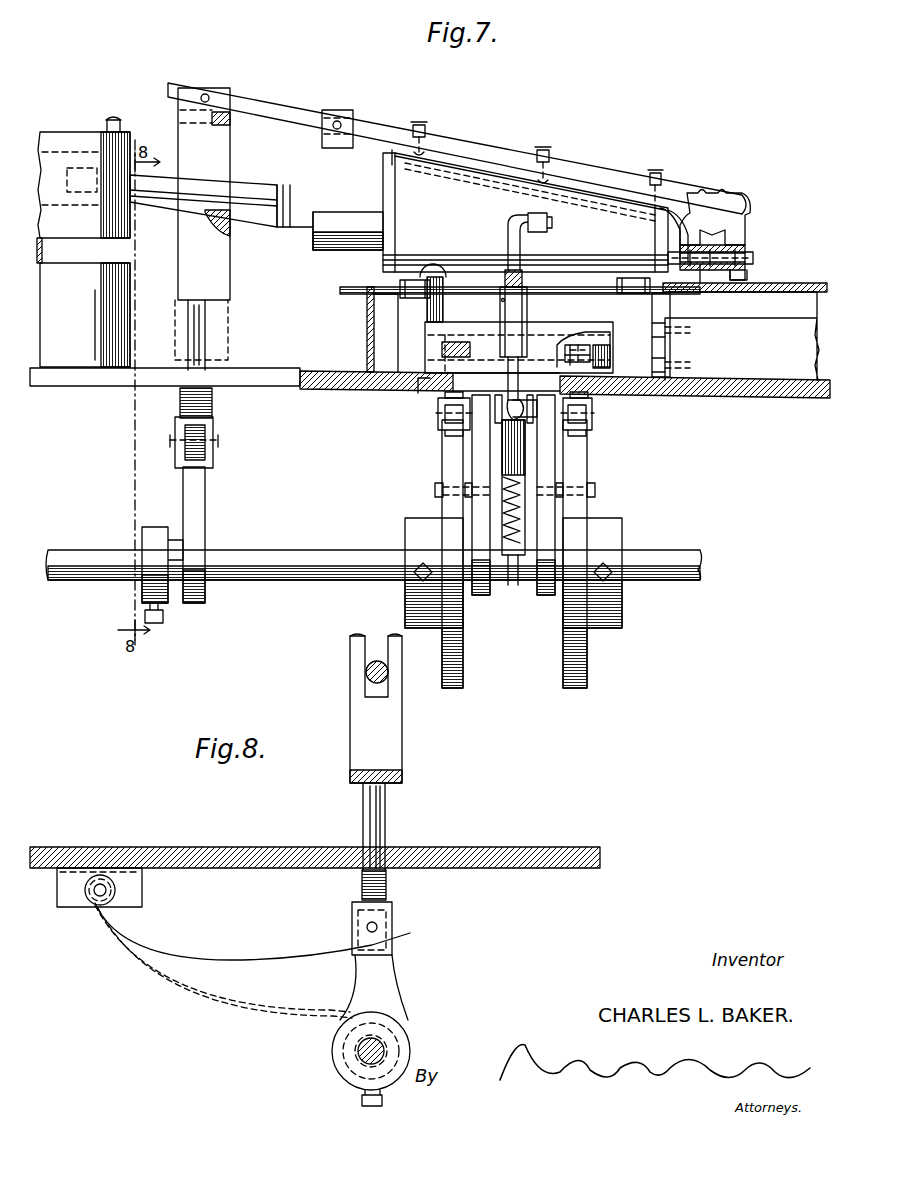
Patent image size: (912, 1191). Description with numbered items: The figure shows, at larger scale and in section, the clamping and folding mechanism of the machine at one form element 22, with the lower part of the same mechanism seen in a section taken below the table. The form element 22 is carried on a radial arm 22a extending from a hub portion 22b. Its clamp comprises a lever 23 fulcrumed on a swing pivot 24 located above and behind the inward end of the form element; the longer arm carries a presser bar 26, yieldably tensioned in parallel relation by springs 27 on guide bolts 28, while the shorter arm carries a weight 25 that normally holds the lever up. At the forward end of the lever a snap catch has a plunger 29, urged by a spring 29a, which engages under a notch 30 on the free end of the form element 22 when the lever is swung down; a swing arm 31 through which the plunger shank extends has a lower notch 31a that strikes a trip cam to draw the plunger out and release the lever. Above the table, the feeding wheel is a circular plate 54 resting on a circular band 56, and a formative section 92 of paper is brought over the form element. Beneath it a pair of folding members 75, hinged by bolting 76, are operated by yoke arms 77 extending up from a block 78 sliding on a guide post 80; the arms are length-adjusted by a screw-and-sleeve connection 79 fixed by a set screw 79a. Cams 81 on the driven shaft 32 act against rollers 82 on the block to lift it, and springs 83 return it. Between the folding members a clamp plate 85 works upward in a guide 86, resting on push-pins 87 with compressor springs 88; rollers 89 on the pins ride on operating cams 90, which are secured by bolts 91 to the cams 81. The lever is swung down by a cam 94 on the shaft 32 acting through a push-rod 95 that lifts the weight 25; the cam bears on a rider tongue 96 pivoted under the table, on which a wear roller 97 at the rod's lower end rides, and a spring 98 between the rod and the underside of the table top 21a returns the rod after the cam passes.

In FIG. 7, the table top 21a is at (292, 380).
In FIG. 8, the table top 21a is at (540, 860).
In FIG. 7, the form element 22 is at (394, 148).
In FIG. 8, the form element 22 is at (366, 675).
In FIG. 7, the radial arm 22a is at (262, 207).
In FIG. 7, the hub portion 22b is at (62, 147).
In FIG. 7, the lever 23 is at (476, 157).
In FIG. 7, the swing pivot 24 is at (339, 122).
In FIG. 7, the weight 25 is at (218, 292).
In FIG. 8, the weight 25 is at (388, 757).
In FIG. 7, the presser bar 26 is at (576, 192).
In FIG. 7, the spring 27 is at (424, 152).
In FIG. 7, the guide bolt 28 is at (419, 125).
In FIG. 7, the plunger 29 is at (676, 266).
In FIG. 7, the spring 29a is at (705, 282).
In FIG. 7, the notch 30 is at (668, 240).
In FIG. 7, the swing arm 31 is at (746, 222).
In FIG. 7, the notch 31a is at (748, 280).
In FIG. 7, the driven shaft 32 is at (674, 570).
In FIG. 8, the driven shaft 32 is at (380, 1045).
In FIG. 7, the circular plate 54 is at (800, 300).
In FIG. 7, the circular band 56 is at (368, 308).
In FIG. 7, the folding member 75 is at (525, 212).
In FIG. 7, the bolting 76 is at (420, 298).
In FIG. 7, the yoke arm 77 is at (507, 240).
In FIG. 7, the block 78 is at (505, 415).
In FIG. 7, the screw-and-sleeve connection 79 is at (526, 306).
In FIG. 7, the set screw 79a is at (503, 300).
In FIG. 7, the guide post 80 is at (525, 462).
In FIG. 7, the cam 81 is at (478, 438).
In FIG. 7, the roller 82 is at (445, 399).
In FIG. 7, the spring 83 is at (514, 570).
In FIG. 7, the clamp plate 85 is at (614, 318).
In FIG. 7, the guide 86 is at (603, 368).
In FIG. 7, the push-pin 87 is at (566, 358).
In FIG. 7, the compressor spring 88 is at (578, 347).
In FIG. 7, the roller 89 is at (445, 414).
In FIG. 7, the operating cam 90 is at (578, 515).
In FIG. 7, the bolt 91 is at (436, 492).
In FIG. 7, the formative section 92 is at (436, 285).
In FIG. 7, the cam 94 is at (194, 518).
In FIG. 8, the cam 94 is at (385, 990).
In FIG. 7, the push-rod 95 is at (200, 348).
In FIG. 8, the push-rod 95 is at (375, 813).
In FIG. 8, the rider tongue 96 is at (285, 960).
In FIG. 7, the wear roller 97 is at (200, 434).
In FIG. 8, the wear roller 97 is at (392, 917).
In FIG. 7, the spring 98 is at (182, 402).
In FIG. 8, the spring 98 is at (387, 888).